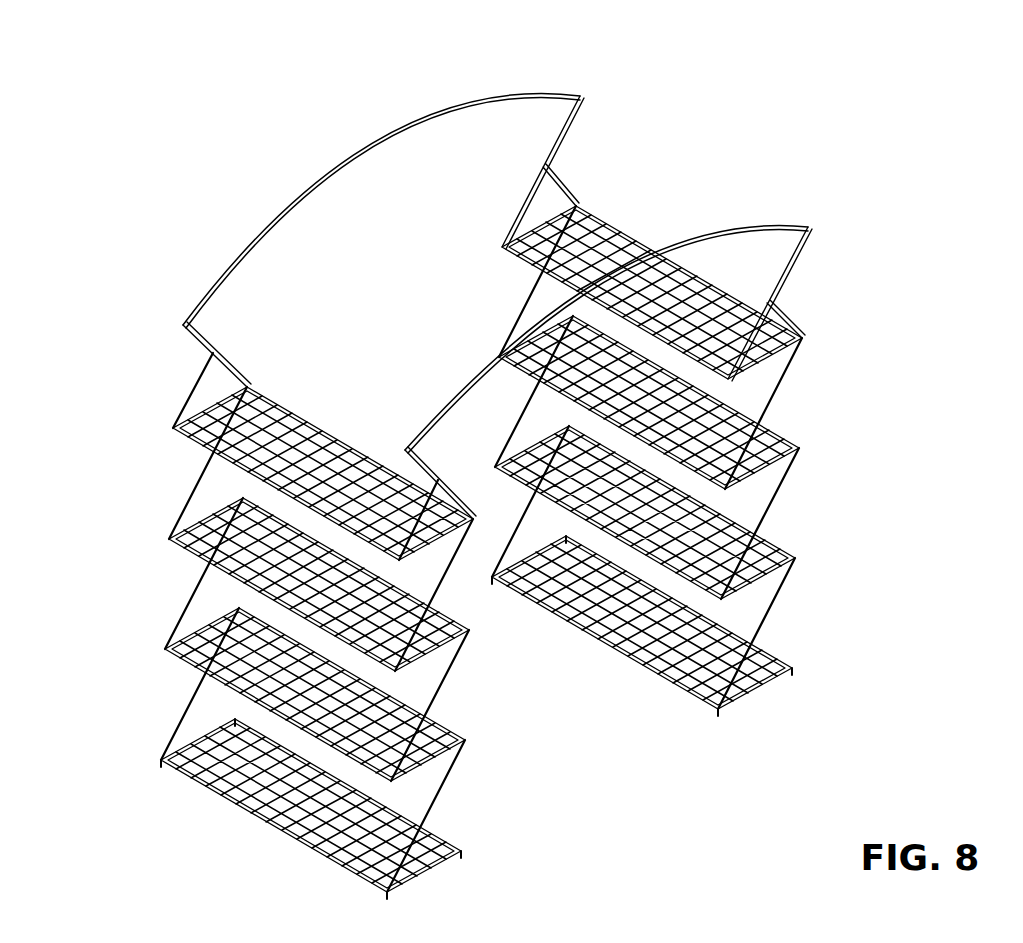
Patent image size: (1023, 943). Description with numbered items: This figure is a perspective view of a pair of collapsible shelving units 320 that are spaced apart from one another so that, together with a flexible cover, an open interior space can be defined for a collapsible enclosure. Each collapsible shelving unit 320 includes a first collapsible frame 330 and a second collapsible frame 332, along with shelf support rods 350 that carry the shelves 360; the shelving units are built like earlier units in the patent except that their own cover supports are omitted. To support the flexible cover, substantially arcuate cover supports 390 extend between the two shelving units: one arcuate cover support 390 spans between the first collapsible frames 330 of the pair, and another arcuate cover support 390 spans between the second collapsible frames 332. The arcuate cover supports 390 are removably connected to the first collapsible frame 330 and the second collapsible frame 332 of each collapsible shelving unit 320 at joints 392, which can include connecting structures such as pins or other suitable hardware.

The collapsible shelving unit 320 is at (486, 552).
The first collapsible frame 330 is at (463, 672).
The second collapsible frame 332 is at (176, 395).
The shelf support rod 350 is at (258, 390).
The shelf 360 is at (318, 437).
The substantially arcuate cover support 390 is at (374, 147).
The joint 392 is at (583, 97).